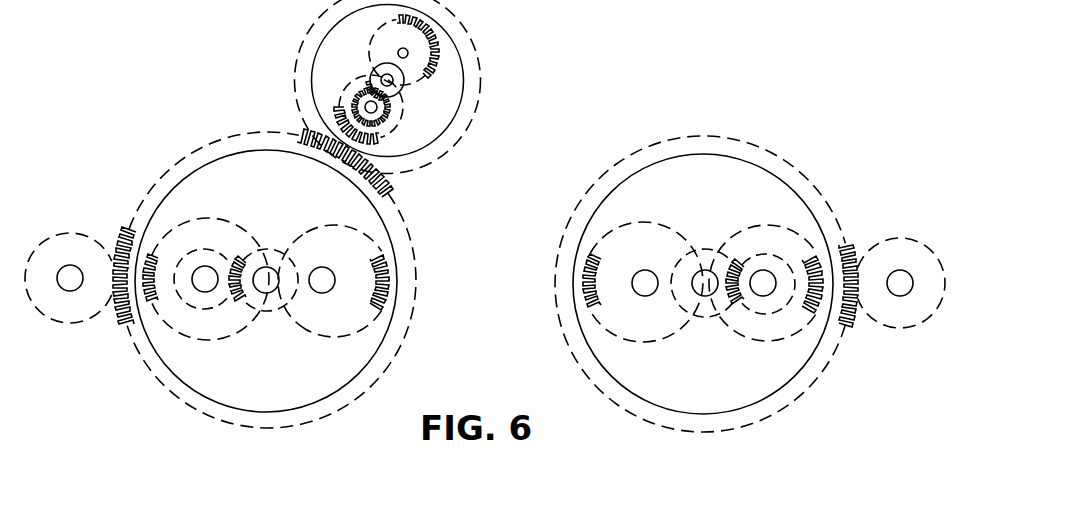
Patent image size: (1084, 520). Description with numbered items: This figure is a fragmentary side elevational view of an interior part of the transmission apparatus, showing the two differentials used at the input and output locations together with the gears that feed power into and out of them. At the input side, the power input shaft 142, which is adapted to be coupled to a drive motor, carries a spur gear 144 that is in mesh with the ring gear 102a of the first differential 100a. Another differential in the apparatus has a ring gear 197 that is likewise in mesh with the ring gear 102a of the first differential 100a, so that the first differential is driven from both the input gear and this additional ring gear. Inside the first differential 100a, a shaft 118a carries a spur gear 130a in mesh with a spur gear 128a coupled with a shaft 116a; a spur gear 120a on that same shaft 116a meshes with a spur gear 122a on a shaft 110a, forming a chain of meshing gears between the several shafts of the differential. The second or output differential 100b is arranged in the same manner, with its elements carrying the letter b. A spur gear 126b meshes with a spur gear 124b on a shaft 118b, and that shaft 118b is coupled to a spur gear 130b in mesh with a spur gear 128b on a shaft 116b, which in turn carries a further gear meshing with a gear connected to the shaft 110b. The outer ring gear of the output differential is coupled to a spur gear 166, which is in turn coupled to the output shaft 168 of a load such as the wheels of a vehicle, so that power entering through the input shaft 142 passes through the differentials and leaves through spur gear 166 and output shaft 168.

The ring gear 197 is at (474, 32).
The spur gear 144 is at (90, 233).
The power input shaft 142 is at (72, 283).
The first differential 100a is at (305, 424).
The ring gear 102a is at (398, 213).
The spur gear 120a is at (202, 255).
The spur gear 128a is at (249, 234).
The spur gear 130a is at (292, 230).
The spur gear 122a is at (293, 257).
The shaft 118a is at (322, 281).
The shaft 116a is at (205, 283).
The shaft 110a is at (266, 283).
The second or output differential 100b is at (698, 432).
The spur gear 166 is at (913, 330).
The output shaft 168 is at (898, 283).
The spur gear 128b is at (620, 335).
The shaft 116b is at (645, 283).
The spur gear 126b is at (705, 252).
The shaft 110b is at (705, 283).
The shaft 118b is at (763, 283).
The spur gear 124b is at (787, 263).
The spur gear 130b is at (760, 227).